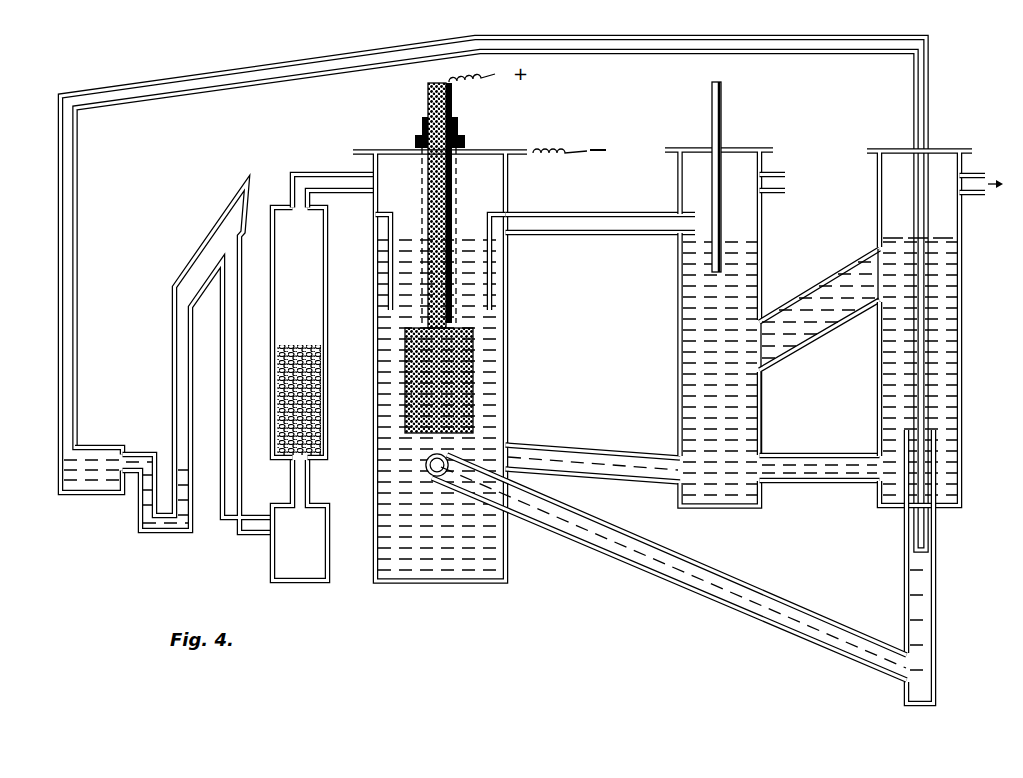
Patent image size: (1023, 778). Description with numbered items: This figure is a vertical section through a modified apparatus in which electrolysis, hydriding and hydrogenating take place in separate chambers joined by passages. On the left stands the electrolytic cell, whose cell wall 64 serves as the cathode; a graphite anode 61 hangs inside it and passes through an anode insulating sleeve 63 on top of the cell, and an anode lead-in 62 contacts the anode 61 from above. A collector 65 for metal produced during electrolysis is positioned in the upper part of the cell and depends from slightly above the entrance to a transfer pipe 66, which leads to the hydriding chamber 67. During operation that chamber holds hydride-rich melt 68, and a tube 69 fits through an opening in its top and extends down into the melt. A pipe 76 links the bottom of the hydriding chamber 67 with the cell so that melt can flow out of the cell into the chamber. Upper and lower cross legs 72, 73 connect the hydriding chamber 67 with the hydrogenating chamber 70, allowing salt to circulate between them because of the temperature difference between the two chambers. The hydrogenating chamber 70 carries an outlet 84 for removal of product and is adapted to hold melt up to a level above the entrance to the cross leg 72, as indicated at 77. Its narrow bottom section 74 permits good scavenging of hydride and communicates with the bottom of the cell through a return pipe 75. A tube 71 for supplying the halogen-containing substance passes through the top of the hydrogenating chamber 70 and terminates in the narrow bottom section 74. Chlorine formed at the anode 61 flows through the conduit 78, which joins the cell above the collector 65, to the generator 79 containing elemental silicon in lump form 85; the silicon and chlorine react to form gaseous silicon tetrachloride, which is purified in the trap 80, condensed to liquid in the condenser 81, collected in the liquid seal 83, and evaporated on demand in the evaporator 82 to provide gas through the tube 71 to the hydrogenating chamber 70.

The graphite anode 61 is at (462, 373).
The anode lead-in 62 is at (428, 96).
The anode insulating sleeve 63 is at (458, 138).
The electrolysis cell wall 64 is at (508, 320).
The collector 65 is at (492, 278).
The transfer pipe 66 is at (596, 212).
The hydriding chamber 67 is at (680, 318).
The hydride-rich melt 68 is at (742, 404).
The tube 69 is at (714, 121).
The hydrogenating chamber 70 is at (963, 330).
The tube 71 is at (915, 87).
The upper cross leg 72 is at (808, 292).
The lower cross leg 73 is at (815, 455).
The narrow bottom section 74 is at (936, 565).
The return pipe 75 is at (735, 578).
The pipe 76 is at (586, 447).
The melt level 77 is at (963, 238).
The conduit 78 is at (340, 170).
The generator 79 is at (326, 378).
The trap 80 is at (300, 583).
The condenser 81 is at (207, 248).
The evaporator 82 is at (100, 447).
The liquid seal 83 is at (165, 533).
The outlet 84 is at (968, 191).
The silicon lumps 85 is at (318, 345).